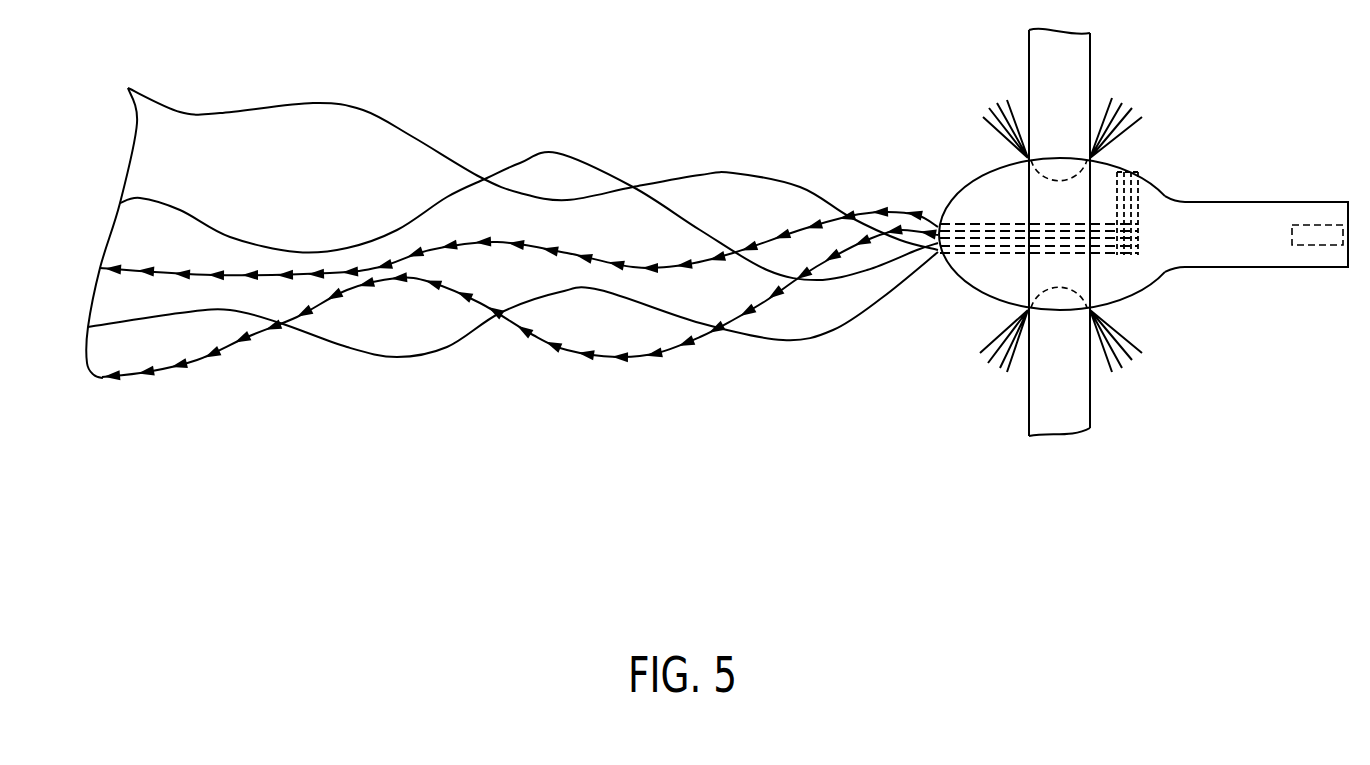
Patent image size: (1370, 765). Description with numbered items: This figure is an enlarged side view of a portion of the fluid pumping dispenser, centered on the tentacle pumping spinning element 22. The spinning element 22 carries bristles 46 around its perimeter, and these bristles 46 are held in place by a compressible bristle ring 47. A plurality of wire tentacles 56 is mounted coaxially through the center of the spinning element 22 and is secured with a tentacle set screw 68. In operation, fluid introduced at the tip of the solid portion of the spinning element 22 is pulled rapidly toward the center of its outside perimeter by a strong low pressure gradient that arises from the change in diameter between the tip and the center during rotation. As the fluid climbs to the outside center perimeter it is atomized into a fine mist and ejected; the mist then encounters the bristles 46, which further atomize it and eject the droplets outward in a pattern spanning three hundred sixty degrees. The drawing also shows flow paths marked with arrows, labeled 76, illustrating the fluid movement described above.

The tentacle pumping spinning element 22 is at (1002, 287).
The bristles 46 is at (983, 117).
The compressible bristle ring 47 is at (1087, 283).
The wire tentacles 56 is at (718, 172).
The tentacle set screw 68 is at (1138, 177).
The fluid flow path with arrows 76 is at (607, 360).